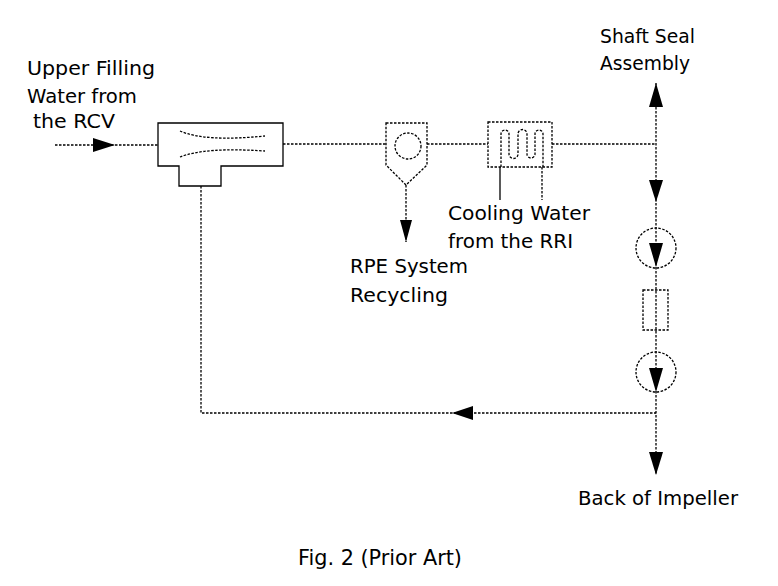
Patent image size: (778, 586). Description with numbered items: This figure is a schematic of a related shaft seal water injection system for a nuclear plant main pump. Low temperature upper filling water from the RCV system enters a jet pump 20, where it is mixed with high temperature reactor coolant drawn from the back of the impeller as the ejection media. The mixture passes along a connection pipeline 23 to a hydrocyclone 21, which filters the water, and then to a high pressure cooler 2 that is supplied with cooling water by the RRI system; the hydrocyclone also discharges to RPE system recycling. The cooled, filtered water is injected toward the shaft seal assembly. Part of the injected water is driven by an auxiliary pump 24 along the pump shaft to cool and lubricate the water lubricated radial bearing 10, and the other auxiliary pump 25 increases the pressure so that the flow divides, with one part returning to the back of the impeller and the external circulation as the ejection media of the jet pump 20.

The jet pump 20 is at (213, 123).
The connection pipeline 23 is at (332, 143).
The hydrocyclone 21 is at (404, 123).
The heat exchanger 2 is at (513, 122).
The auxiliary pump 24 is at (637, 252).
The water lubricated radial bearing 10 is at (643, 311).
The auxiliary pump 25 is at (637, 372).